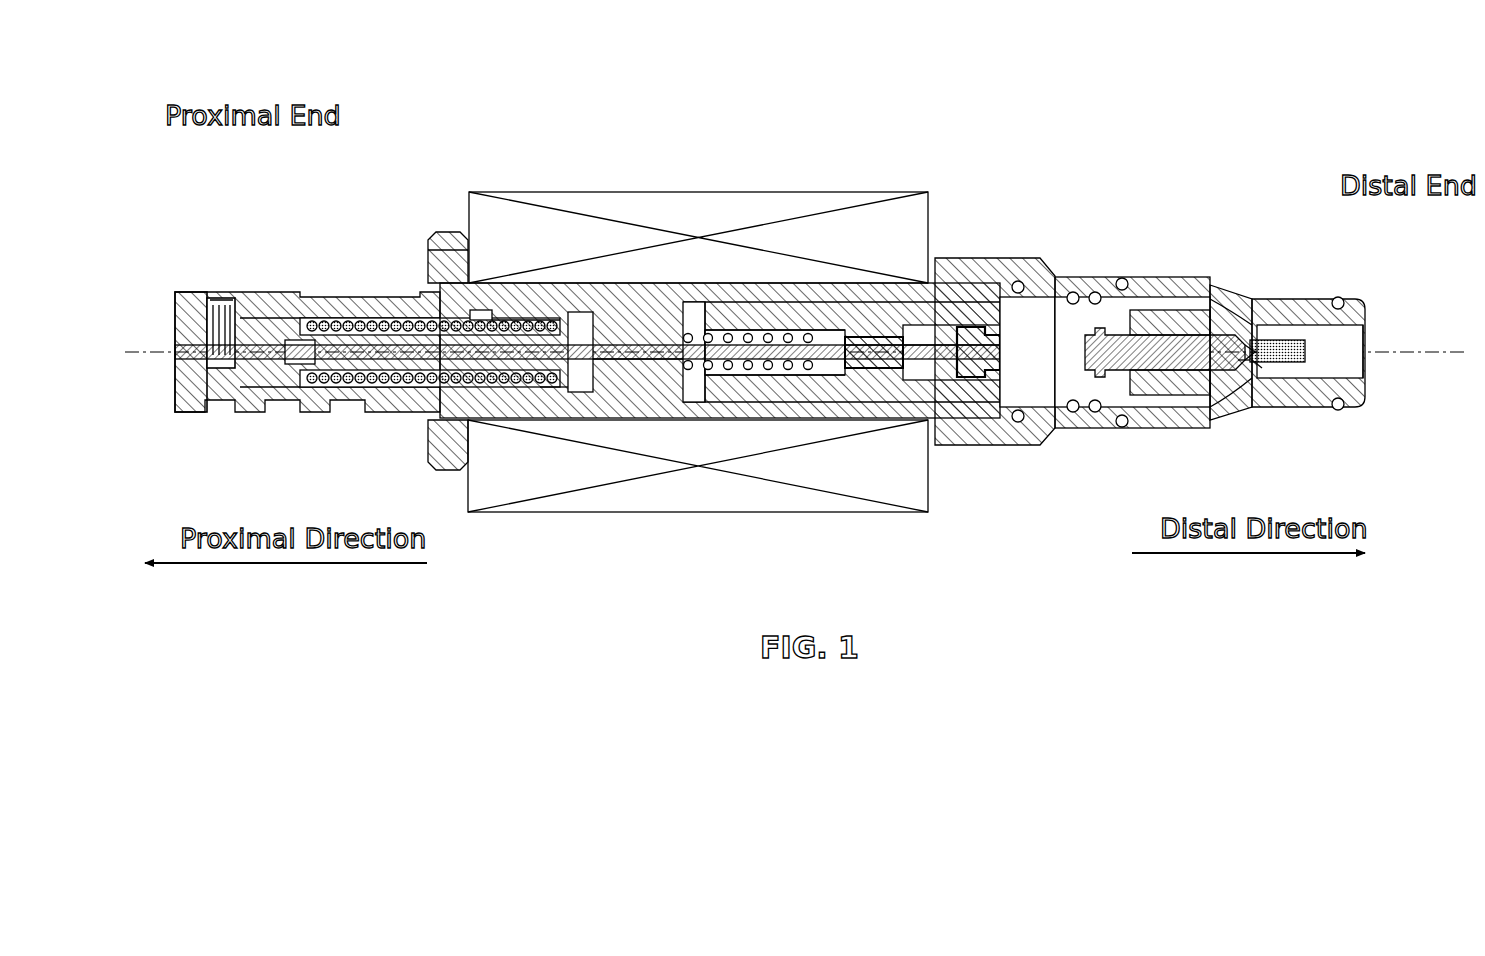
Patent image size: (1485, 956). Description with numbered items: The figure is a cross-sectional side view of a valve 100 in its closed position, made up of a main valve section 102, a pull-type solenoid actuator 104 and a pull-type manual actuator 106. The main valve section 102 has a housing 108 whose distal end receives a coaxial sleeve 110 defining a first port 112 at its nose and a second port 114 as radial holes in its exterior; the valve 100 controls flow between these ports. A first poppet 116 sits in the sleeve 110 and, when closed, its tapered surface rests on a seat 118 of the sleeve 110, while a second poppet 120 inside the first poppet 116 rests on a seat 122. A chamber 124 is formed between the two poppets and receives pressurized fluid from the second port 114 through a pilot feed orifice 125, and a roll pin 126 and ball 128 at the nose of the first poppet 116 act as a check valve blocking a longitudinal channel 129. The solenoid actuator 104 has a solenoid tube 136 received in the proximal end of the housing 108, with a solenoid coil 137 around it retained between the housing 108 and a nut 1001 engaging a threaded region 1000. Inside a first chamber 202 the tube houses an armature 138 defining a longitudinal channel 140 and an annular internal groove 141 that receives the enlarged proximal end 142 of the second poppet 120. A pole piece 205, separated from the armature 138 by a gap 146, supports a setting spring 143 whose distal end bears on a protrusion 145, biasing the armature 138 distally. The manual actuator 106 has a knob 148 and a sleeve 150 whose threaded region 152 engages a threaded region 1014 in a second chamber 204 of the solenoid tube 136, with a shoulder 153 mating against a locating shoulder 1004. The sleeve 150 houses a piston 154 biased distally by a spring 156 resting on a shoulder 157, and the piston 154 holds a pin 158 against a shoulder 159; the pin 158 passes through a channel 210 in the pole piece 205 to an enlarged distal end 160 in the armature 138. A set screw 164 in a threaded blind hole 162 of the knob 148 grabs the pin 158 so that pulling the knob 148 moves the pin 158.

The valve 100 is at (210, 225).
The main valve section 102 is at (1195, 225).
The pull-type solenoid actuator 104 is at (594, 190).
The pull-type manual actuator 106 is at (362, 238).
The housing 108 is at (968, 312).
The sleeve 110 is at (1290, 330).
The first port 112 is at (1372, 352).
The second port 114 is at (1238, 292).
The first poppet 116 is at (1243, 345).
The seat 118 is at (1255, 366).
The second poppet 120 is at (1150, 325).
The seat 122 is at (1264, 370).
The chamber 124 is at (1195, 420).
The pilot feed orifice 125 is at (1185, 345).
The roll pin 126 is at (1290, 345).
The ball 128 is at (1258, 345).
The longitudinal channel 129 is at (1242, 364).
The solenoid tube 136 is at (640, 285).
The solenoid coil 137 is at (788, 320).
The armature 138 is at (755, 320).
The longitudinal channel 140 is at (930, 362).
The annular internal groove 141 is at (985, 330).
The enlarged proximal end 142 is at (986, 382).
The setting spring 143 is at (725, 330).
The protrusion 145 is at (832, 335).
The gap 146 is at (692, 398).
The knob 148 is at (188, 318).
The sleeve 150 is at (258, 315).
The threaded region 152 is at (478, 320).
The shoulder 153 is at (425, 292).
The piston 154 is at (603, 322).
The spring 156 is at (360, 378).
The shoulder 157 is at (300, 364).
The pin 158 is at (610, 366).
The shoulder 159 is at (345, 338).
The enlarged distal end 160 is at (872, 368).
The threaded blind hole 162 is at (232, 287).
The set screw 164 is at (222, 356).
The first chamber 202 is at (1030, 328).
The second chamber 204 is at (545, 382).
The pole piece 205 is at (700, 320).
The channel 210 is at (640, 354).
The threaded region 1000 is at (450, 283).
The nut 1001 is at (440, 242).
The locating shoulder 1004 is at (447, 408).
The threaded region 1014 is at (520, 322).